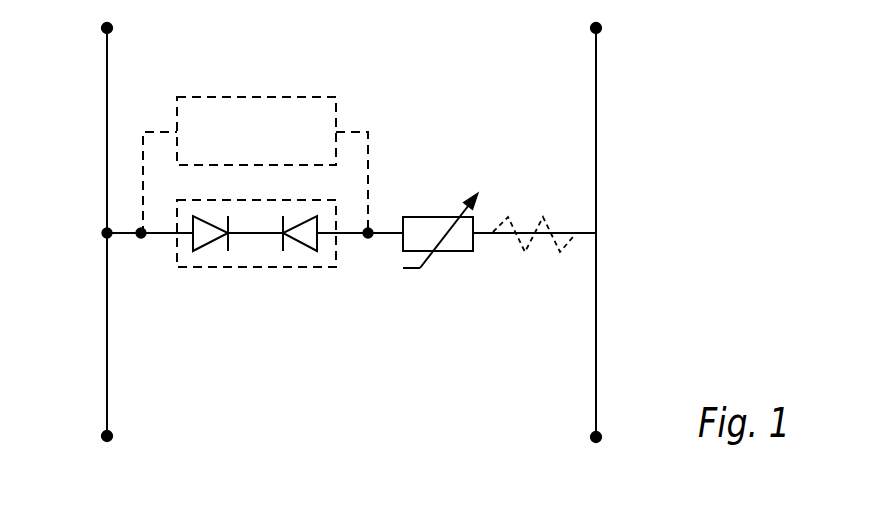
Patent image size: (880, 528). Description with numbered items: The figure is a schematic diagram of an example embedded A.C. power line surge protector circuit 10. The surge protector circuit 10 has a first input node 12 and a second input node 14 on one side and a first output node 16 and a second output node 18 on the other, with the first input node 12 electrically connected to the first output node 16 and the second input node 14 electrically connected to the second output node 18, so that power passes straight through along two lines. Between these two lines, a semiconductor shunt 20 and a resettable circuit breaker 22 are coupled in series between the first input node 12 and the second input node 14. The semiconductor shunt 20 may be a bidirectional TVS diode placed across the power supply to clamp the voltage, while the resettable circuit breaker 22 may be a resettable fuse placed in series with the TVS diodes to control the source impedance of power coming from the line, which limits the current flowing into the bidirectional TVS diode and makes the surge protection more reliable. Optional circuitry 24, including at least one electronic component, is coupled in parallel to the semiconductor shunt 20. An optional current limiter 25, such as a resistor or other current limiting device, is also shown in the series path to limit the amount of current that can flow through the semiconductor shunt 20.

The power line surge protector circuit 10 is at (699, 157).
The first input node 12 is at (605, 445).
The second input node 14 is at (94, 437).
The first output node 16 is at (603, 37).
The second output node 18 is at (96, 28).
The semiconductor shunt 20 is at (285, 263).
The resettable circuit breaker 22 is at (452, 247).
The circuitry 24 is at (227, 102).
The current limiter 25 is at (512, 223).